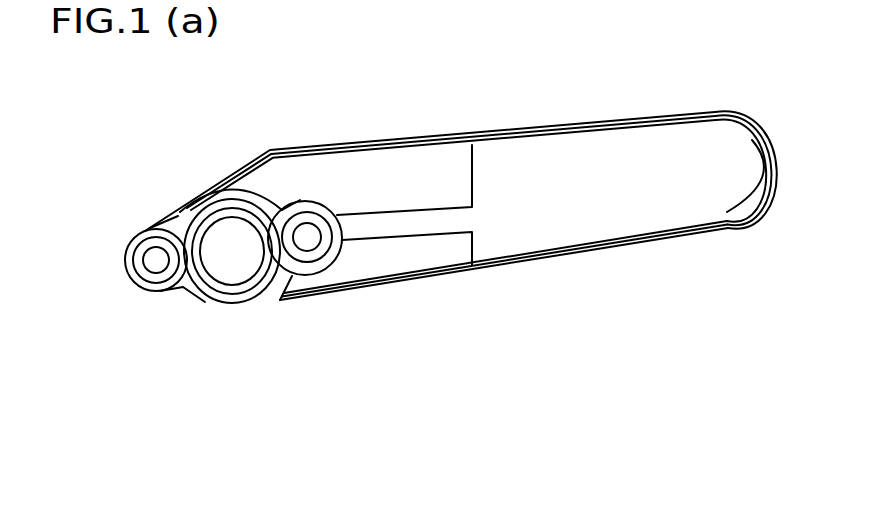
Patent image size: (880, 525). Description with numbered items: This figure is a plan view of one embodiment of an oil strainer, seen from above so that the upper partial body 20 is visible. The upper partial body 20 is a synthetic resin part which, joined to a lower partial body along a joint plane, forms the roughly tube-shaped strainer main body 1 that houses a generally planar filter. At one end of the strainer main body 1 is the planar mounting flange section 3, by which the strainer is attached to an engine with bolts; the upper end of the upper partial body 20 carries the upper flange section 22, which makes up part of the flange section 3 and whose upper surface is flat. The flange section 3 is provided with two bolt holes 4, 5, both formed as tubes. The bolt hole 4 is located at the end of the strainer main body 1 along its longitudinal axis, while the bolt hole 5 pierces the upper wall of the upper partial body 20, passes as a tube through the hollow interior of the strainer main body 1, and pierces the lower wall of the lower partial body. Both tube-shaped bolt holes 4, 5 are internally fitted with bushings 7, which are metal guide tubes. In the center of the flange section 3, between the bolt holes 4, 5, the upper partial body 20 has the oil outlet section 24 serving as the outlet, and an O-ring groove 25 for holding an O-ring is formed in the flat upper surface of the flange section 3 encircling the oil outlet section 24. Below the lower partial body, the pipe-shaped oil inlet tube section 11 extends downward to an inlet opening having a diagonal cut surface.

The strainer main body 1 is at (507, 103).
The mounting flange section 3 is at (202, 328).
The bolt hole 4 is at (149, 243).
The bolt hole 5 is at (310, 278).
The bushing 7 is at (140, 284).
The oil inlet tube section 11 is at (152, 302).
The upper partial body 20 is at (678, 138).
The upper flange section 22 is at (233, 305).
The oil outlet section 24 is at (217, 231).
The O-ring groove 25 is at (261, 288).